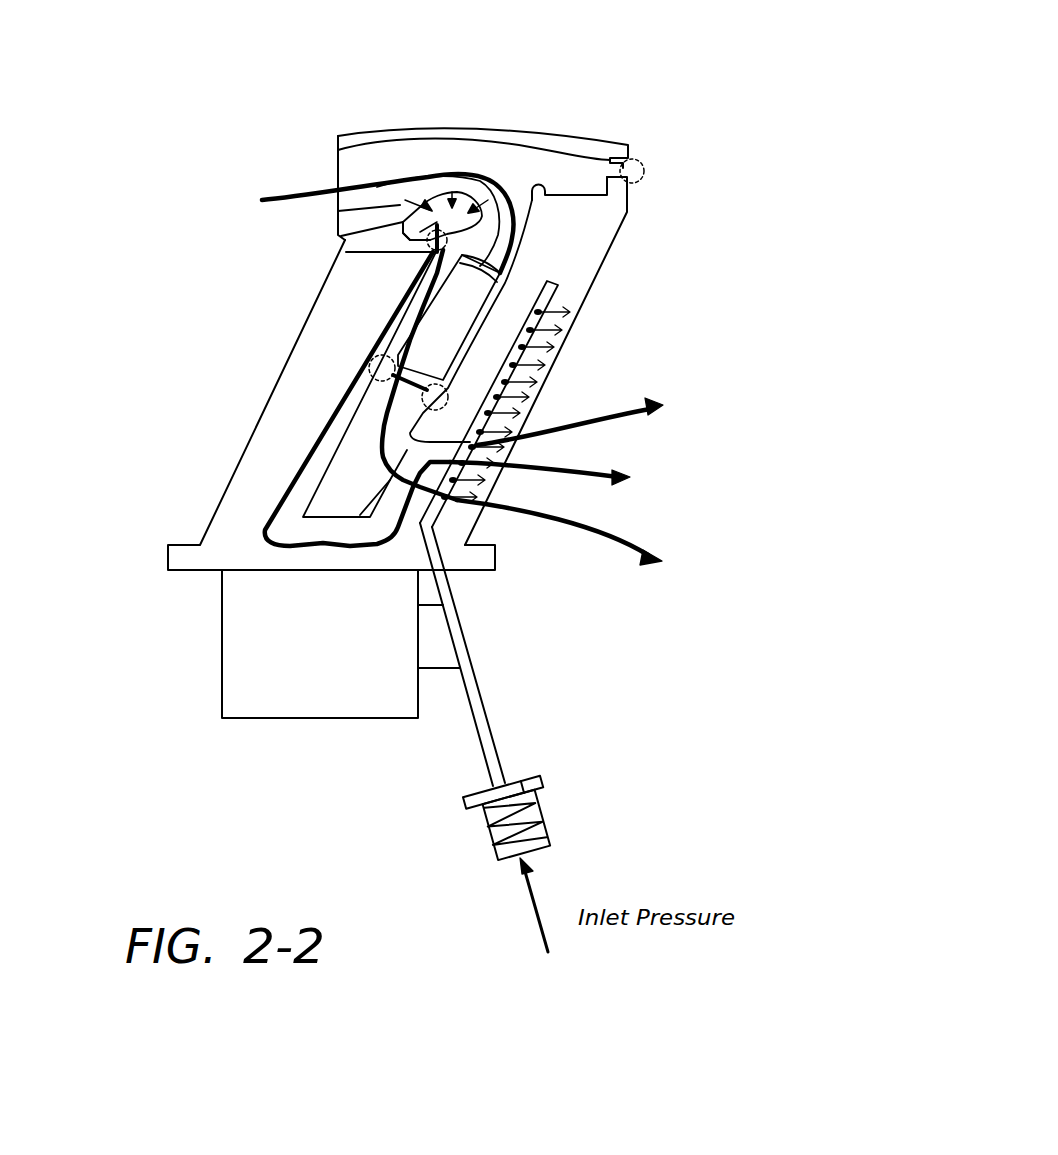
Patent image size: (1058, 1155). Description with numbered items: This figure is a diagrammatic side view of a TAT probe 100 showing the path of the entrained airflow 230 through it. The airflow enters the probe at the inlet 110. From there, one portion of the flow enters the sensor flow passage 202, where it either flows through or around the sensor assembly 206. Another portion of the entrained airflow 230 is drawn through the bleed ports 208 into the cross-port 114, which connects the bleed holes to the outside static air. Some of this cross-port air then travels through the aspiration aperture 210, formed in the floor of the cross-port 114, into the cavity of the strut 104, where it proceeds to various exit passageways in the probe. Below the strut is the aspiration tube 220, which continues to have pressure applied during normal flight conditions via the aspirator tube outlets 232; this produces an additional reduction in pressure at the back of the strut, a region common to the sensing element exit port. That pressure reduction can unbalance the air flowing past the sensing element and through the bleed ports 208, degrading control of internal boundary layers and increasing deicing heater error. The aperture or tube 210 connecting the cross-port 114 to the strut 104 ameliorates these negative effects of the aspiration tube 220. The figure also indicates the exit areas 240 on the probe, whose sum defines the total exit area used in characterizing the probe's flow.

The TAT probe 100 is at (574, 99).
The strut 104 is at (480, 507).
The inlet 110 is at (338, 173).
The cross-port 114 is at (400, 236).
The sensor flow passage 202 is at (533, 243).
The sensor assembly 206 is at (487, 277).
The bleed ports 208 is at (456, 208).
The aspiration aperture 210 is at (432, 209).
The aspiration tube 220 is at (503, 722).
The entrained airflow 230 is at (282, 202).
The aspirator tube outlets 232 is at (558, 305).
The exit areas 240 is at (495, 217).